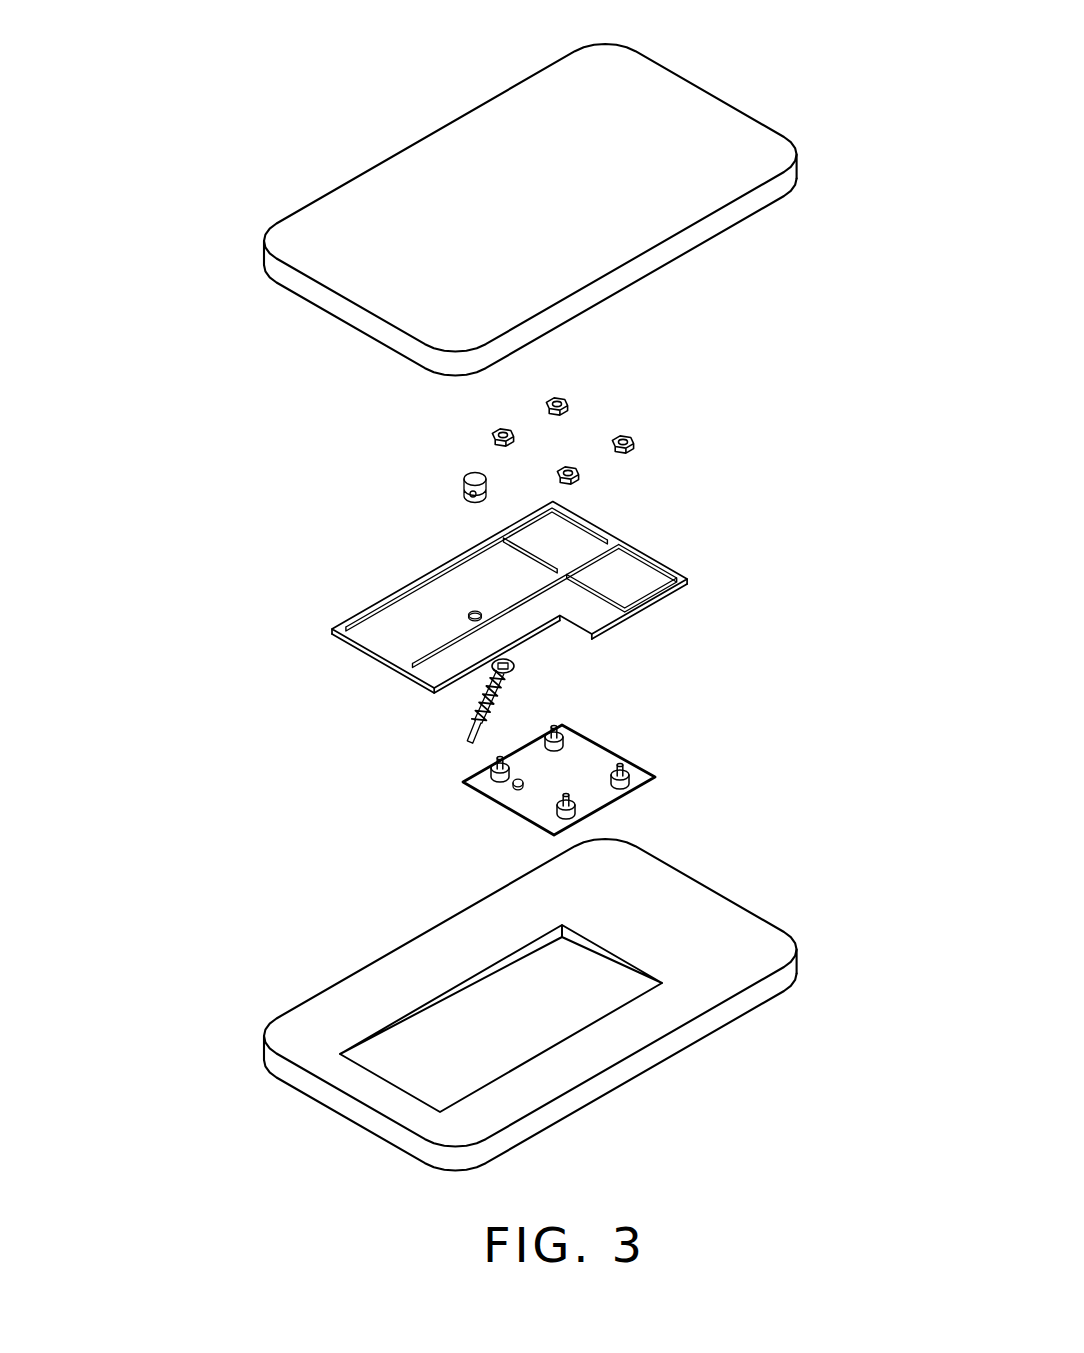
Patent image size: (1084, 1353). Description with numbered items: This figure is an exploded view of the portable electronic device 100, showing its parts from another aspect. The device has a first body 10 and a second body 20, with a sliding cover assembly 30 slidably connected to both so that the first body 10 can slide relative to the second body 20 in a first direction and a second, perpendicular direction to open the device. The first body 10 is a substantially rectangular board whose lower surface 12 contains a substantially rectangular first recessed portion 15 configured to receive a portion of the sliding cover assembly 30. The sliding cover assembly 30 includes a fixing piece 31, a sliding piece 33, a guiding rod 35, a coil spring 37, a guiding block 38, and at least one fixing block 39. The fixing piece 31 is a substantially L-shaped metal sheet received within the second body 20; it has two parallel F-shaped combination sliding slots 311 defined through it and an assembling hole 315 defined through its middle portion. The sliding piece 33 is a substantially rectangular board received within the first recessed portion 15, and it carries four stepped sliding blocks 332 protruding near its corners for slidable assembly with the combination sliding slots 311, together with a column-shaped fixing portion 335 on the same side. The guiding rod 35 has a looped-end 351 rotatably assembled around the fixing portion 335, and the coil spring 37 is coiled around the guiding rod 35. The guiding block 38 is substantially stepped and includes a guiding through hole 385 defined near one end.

The portable electronic device 100 is at (483, 26).
The second body 20 is at (423, 210).
The sliding cover assembly 30 is at (725, 373).
The fixing piece 31 is at (474, 592).
The combination sliding slot 311 is at (588, 523).
The assembling hole 315 is at (475, 610).
The sliding piece 33 is at (555, 766).
The sliding block 332 is at (625, 762).
The fixing portion 335 is at (518, 787).
The guiding rod 35 is at (503, 715).
The looped-end 351 is at (515, 666).
The coil spring 37 is at (483, 703).
The guiding block 38 is at (424, 487).
The guiding through hole 385 is at (474, 478).
The fixing block 39 is at (633, 436).
The first body 10 is at (530, 997).
The lower surface 12 is at (470, 943).
The first recessed portion 15 is at (478, 1030).